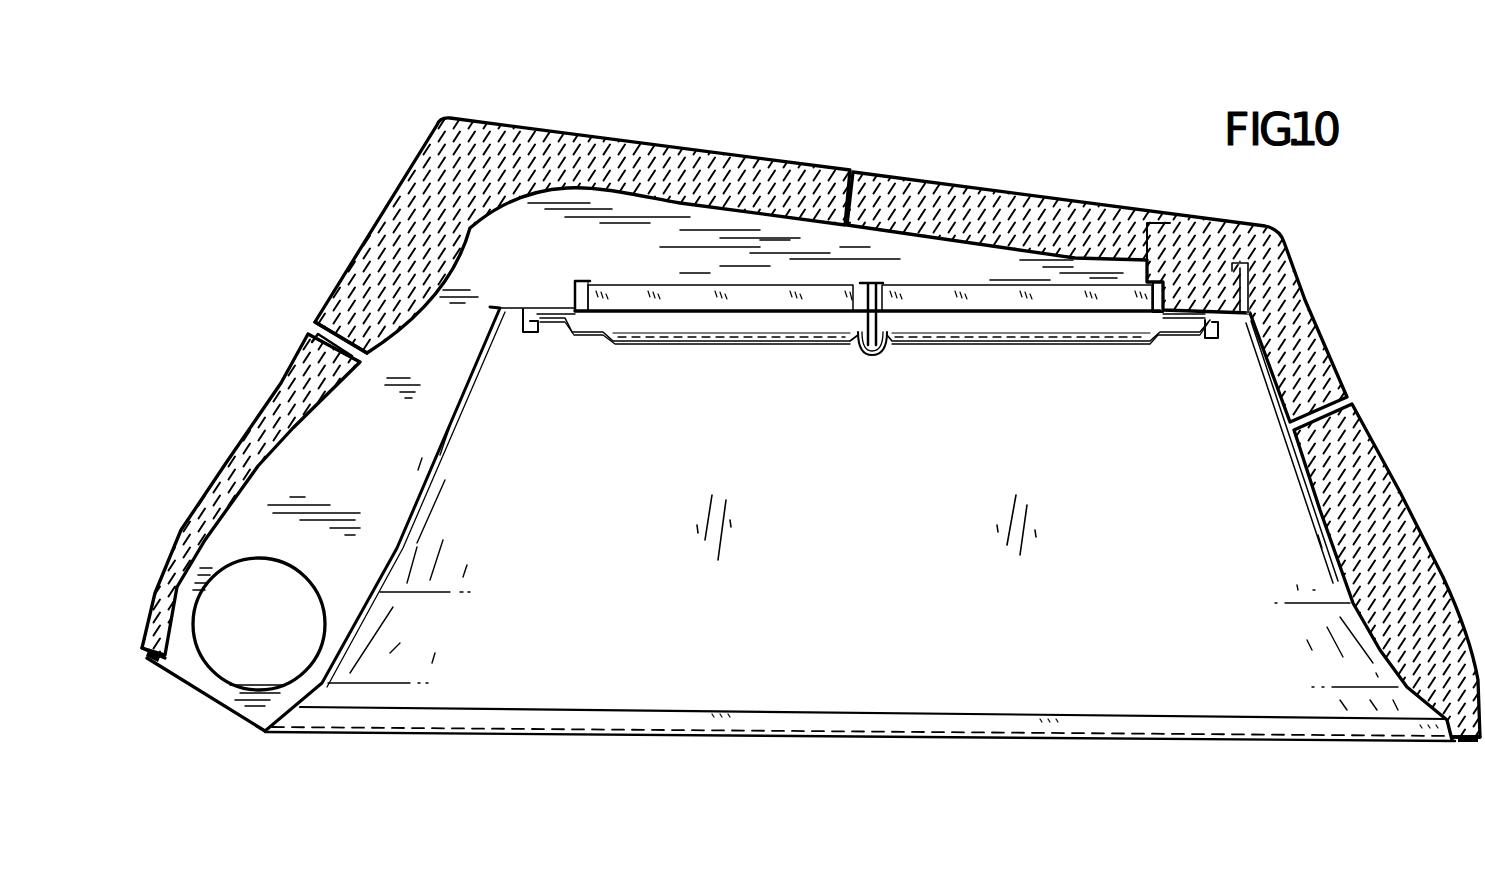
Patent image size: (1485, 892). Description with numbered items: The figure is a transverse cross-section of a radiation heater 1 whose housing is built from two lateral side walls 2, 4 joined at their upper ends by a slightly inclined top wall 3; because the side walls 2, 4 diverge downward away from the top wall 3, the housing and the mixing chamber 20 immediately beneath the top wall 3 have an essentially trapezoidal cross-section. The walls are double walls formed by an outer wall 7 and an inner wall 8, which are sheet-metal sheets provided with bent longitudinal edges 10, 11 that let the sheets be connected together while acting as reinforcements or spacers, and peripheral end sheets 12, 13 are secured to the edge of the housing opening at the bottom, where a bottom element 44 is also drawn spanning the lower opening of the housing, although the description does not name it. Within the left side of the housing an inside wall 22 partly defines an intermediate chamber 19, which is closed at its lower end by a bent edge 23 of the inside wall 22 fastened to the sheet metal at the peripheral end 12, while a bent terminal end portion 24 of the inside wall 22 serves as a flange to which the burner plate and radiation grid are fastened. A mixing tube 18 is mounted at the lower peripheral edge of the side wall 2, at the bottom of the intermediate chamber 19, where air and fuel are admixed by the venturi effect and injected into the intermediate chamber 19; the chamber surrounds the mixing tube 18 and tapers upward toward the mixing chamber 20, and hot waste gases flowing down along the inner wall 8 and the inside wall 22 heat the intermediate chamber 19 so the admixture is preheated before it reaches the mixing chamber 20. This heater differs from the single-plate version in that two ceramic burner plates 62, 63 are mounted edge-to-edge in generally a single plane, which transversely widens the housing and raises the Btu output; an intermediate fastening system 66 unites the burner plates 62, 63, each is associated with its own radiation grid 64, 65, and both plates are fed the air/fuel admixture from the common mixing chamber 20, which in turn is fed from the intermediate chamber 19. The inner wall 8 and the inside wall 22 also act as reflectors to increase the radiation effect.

The radiation heater 1 is at (609, 128).
The side wall 2 is at (272, 368).
The top wall 3 is at (959, 172).
The side wall 4 is at (1378, 410).
The outer wall 7 is at (375, 222).
The inner wall 8 is at (1333, 547).
The bent longitudinal edge 10 is at (342, 312).
The bent longitudinal edge 11 is at (334, 348).
The peripheral end sheet 12 is at (148, 662).
The peripheral end sheet 13 is at (1464, 744).
The mixing tube 18 is at (325, 627).
The intermediate chamber 19 is at (410, 482).
The mixing chamber 20 is at (711, 233).
The inside wall 22 is at (447, 427).
The edge 23 is at (240, 723).
The terminal end portion 24 is at (508, 307).
The bottom plate 44 is at (957, 730).
The ceramic burner plate 62 is at (640, 300).
The ceramic burner plate 63 is at (967, 293).
The radiation grid 64 is at (694, 340).
The radiation grid 65 is at (980, 343).
The intermediate fastening system 66 is at (885, 344).